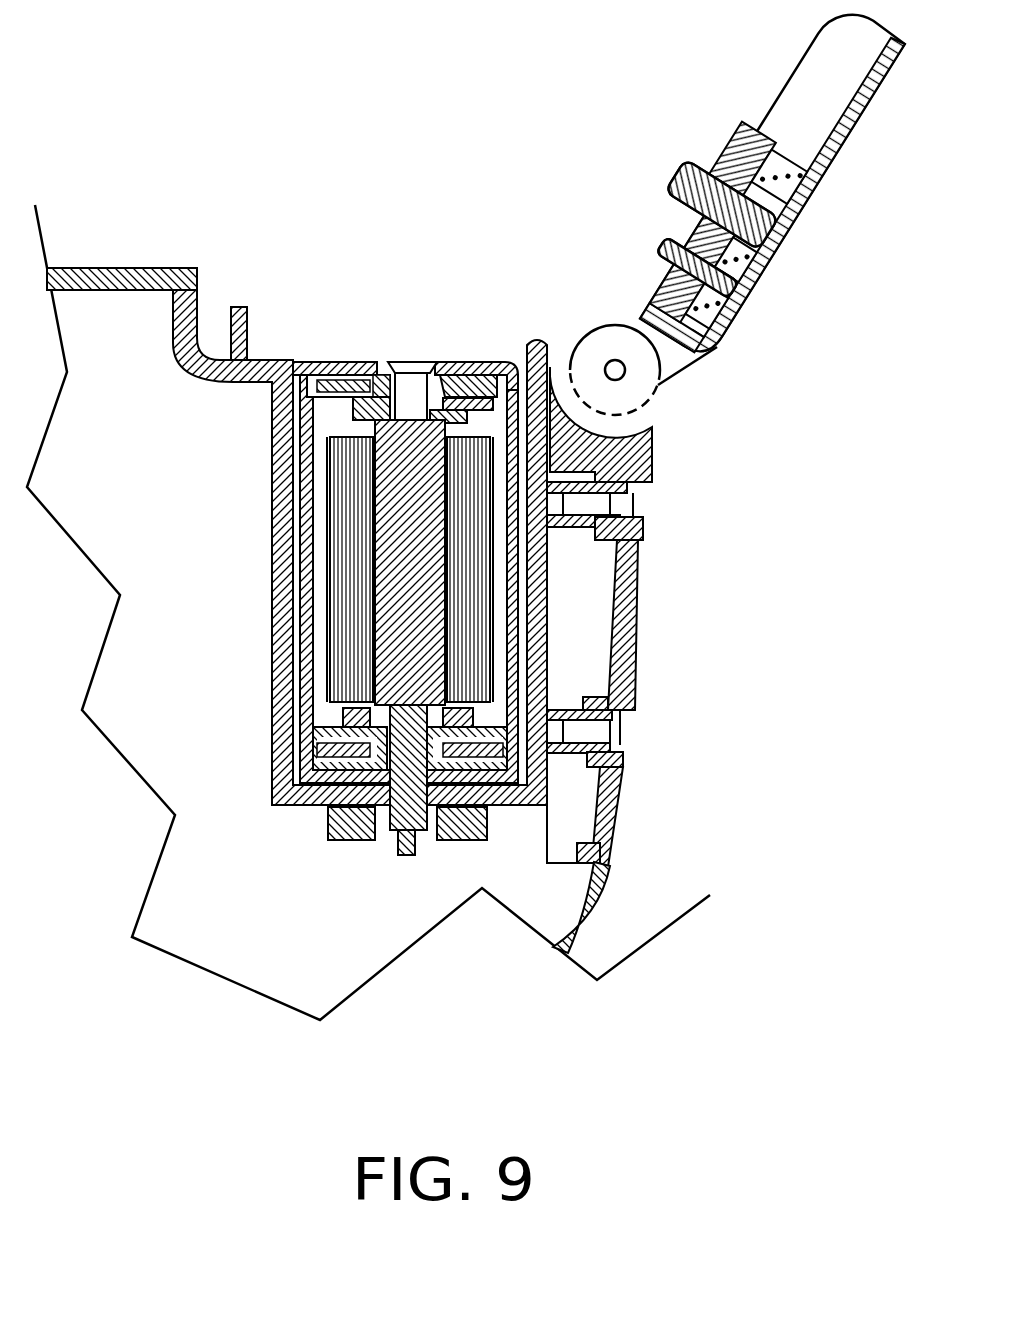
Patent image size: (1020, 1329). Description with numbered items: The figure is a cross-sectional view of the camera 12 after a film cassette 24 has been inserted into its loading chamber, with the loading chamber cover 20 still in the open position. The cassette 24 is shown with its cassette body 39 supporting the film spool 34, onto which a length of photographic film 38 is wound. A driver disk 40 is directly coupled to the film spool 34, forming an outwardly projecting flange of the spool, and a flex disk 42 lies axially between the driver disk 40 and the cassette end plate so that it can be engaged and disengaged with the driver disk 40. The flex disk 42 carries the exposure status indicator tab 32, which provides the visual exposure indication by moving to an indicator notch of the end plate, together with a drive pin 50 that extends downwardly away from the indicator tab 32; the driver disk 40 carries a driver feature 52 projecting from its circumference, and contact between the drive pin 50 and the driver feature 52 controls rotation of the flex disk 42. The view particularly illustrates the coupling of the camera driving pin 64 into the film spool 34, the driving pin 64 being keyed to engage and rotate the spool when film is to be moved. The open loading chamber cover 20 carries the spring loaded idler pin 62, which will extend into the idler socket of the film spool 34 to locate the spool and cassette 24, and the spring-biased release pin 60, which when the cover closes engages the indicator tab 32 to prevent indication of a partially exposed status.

The camera 12 is at (236, 100).
The loading chamber cover 20 is at (800, 244).
The film cassette 24 is at (398, 334).
The exposure status indicator tab 32 is at (497, 363).
The film spool 34 is at (348, 505).
The photographic film 38 is at (330, 540).
The cassette body 39 is at (305, 612).
The driver disk 40 is at (290, 438).
The flex disk 42 is at (304, 398).
The drive pin 50 is at (460, 373).
The driver feature 52 is at (443, 372).
The release pin 60 is at (660, 254).
The idler pin 62 is at (686, 163).
The driving pin 64 is at (410, 854).